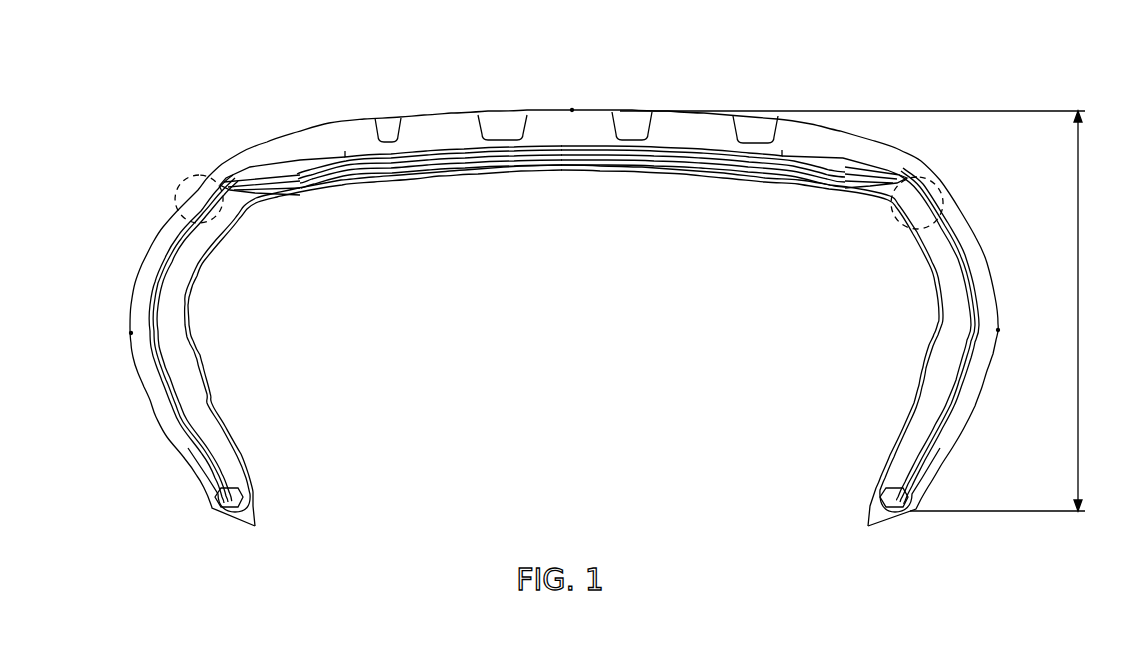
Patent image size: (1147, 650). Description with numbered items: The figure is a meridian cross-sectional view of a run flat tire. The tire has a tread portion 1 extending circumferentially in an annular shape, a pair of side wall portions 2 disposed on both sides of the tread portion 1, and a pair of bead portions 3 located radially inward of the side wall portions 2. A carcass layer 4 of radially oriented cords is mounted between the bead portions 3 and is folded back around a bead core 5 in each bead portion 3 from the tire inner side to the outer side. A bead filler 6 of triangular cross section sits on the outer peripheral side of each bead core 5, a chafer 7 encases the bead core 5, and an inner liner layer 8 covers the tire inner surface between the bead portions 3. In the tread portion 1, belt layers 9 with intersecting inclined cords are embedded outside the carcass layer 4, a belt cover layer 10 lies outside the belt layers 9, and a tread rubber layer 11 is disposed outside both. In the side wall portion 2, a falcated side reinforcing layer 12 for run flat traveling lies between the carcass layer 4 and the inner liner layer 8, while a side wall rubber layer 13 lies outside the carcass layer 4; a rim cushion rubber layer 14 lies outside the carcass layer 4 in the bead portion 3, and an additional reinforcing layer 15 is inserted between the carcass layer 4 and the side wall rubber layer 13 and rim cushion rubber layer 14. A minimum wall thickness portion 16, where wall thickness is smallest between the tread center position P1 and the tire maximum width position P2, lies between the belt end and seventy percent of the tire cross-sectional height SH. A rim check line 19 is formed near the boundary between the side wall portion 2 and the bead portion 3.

The tread portion 1 is at (447, 110).
The side wall portion 2 is at (136, 275).
The bead portion 3 is at (197, 497).
The carcass layer 4 is at (930, 243).
The bead core 5 is at (232, 497).
The bead filler 6 is at (222, 465).
The chafer 7 is at (255, 520).
The inner liner layer 8 is at (867, 205).
The belt layers 9 is at (790, 160).
The belt cover layer 10 is at (855, 157).
The tread rubber layer 11 is at (692, 116).
The side reinforcing layer 12 is at (178, 323).
The side wall rubber layer 13 is at (140, 350).
The rim cushion rubber layer 14 is at (175, 430).
The additional reinforcing layer 15 is at (155, 380).
The minimum wall thickness portion 16 is at (202, 188).
The rim check line 19 is at (175, 442).
The center position of the tread portion P1 is at (572, 110).
The tire maximum width position P2 is at (131, 333).
The tire cross-sectional height SH is at (866, 311).